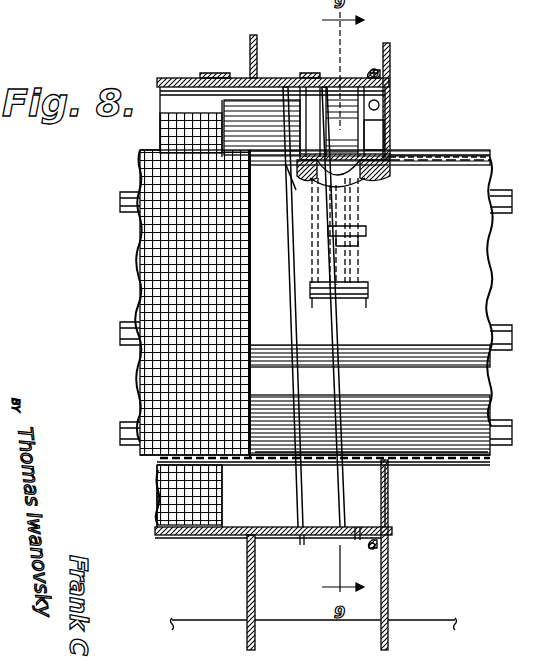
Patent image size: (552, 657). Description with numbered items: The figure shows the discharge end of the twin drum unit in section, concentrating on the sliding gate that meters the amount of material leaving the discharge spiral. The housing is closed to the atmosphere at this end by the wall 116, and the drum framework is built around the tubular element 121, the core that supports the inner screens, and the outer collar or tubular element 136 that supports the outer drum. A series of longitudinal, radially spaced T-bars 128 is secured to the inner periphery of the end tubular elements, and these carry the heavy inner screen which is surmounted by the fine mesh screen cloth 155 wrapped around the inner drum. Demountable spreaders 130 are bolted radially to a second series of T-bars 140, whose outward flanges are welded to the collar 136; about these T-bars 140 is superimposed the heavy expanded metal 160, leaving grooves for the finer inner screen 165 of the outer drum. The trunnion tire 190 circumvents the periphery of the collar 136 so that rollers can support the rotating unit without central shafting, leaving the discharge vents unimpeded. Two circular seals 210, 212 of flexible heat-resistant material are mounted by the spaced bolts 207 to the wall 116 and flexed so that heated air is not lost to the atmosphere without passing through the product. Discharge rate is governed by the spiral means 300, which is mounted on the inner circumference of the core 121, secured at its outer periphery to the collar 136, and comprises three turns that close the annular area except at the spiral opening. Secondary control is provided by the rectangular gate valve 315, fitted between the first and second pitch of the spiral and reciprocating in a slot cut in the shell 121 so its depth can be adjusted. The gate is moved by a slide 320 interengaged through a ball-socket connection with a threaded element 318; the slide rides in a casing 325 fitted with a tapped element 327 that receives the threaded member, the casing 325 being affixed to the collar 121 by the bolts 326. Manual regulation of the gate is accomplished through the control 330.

The wall 116 is at (250, 57).
The tubular element 121 is at (422, 460).
The T-bars 128 is at (130, 322).
The spreaders 130 is at (375, 152).
The tubular element 136 is at (358, 526).
The T-bars 140 is at (280, 466).
The fine mesh screen cloth 155 is at (140, 257).
The expanded metal 160 is at (196, 538).
The fine mesh screen 165 is at (156, 522).
The trunnion tire 190 is at (300, 538).
The bolts 207 is at (374, 68).
The seal 210 is at (262, 77).
The seal 212 is at (368, 78).
The spiral means 300 is at (326, 82).
The gate valve 315 is at (272, 122).
The threaded element 318 is at (360, 266).
The slide 320 is at (292, 196).
The casing 325 is at (360, 215).
The bolts 326 is at (382, 178).
The tapped element 327 is at (362, 245).
The control 330 is at (370, 297).